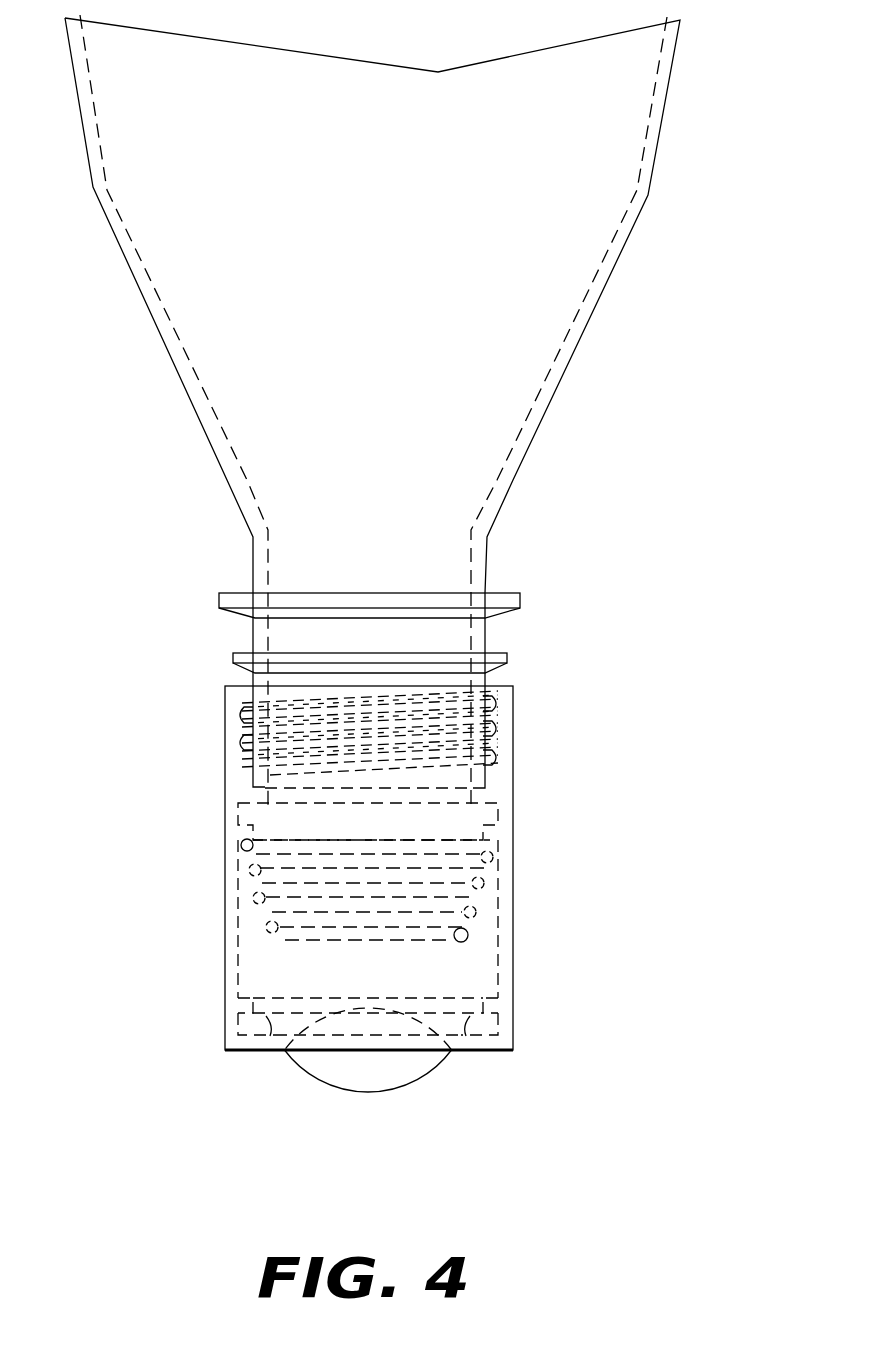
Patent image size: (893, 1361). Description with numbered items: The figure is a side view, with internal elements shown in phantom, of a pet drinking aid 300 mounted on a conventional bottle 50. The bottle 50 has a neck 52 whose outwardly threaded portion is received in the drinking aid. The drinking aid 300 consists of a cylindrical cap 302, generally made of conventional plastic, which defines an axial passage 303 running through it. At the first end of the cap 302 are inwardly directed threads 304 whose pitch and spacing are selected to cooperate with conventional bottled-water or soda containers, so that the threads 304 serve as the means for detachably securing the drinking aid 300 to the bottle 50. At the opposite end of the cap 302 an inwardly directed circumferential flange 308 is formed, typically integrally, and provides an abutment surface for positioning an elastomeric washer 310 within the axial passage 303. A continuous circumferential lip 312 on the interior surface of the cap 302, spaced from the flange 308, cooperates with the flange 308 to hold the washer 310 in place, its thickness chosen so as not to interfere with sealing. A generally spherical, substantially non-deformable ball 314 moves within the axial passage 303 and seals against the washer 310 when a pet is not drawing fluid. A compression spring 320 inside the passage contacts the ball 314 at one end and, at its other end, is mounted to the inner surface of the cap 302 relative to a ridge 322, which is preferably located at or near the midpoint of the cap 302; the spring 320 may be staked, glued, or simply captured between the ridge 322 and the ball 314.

The bottle 50 is at (550, 264).
The neck 52 is at (287, 635).
The pet drinking aid 300 is at (552, 777).
The cylindrical cap 302 is at (513, 893).
The axial passage 303 is at (310, 768).
The inwardly directed threads 304 is at (513, 722).
The circumferential flange 308 is at (478, 1043).
The washer 310 is at (480, 1028).
The circumferential lip 312 is at (490, 1010).
The ball 314 is at (348, 1075).
The compression spring 320 is at (300, 905).
The ridge 322 is at (513, 832).